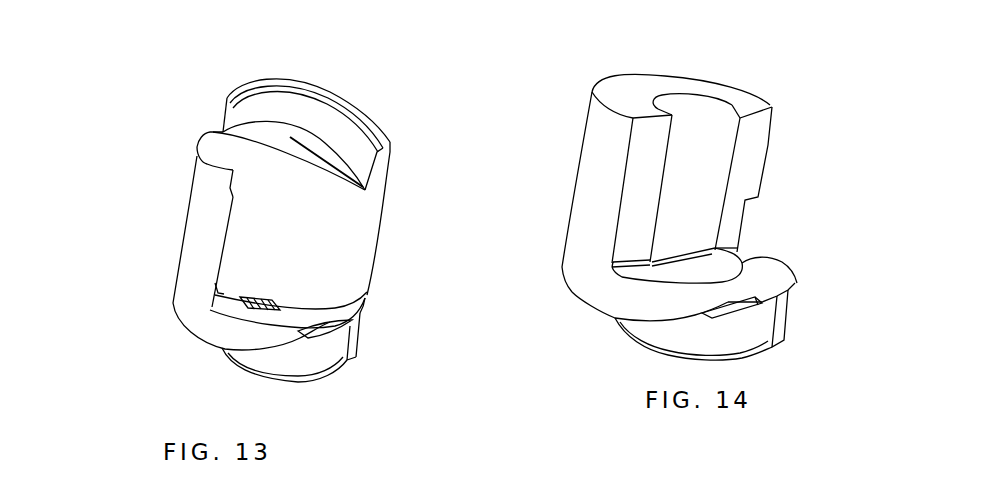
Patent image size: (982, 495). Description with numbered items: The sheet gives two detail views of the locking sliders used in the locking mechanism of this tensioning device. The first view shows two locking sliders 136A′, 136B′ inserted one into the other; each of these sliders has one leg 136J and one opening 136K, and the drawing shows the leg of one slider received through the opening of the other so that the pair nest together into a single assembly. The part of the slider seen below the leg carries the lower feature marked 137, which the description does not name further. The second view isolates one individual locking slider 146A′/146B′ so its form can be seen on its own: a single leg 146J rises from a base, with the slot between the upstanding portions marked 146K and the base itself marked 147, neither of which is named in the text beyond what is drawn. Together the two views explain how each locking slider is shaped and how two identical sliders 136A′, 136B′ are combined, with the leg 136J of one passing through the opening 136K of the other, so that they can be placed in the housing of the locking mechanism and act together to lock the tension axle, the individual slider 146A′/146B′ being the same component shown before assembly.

In FIG. 13, the saddle / recess 137 is at (257, 108).
In FIG. 13, the opening 136K is at (213, 167).
In FIG. 13, the leg 136J is at (200, 212).
In FIG. 13, the locking slider 136A′ is at (183, 309).
In FIG. 13, the locking slider 136B′ is at (345, 223).
In FIG. 14, the leg 146J is at (602, 125).
In FIG. 14, the slot 146K is at (703, 193).
In FIG. 14, the locking slider 146A′ is at (597, 172).
In FIG. 14, the locking slider 146B′ is at (522, 216).
In FIG. 14, the base 147 is at (668, 338).